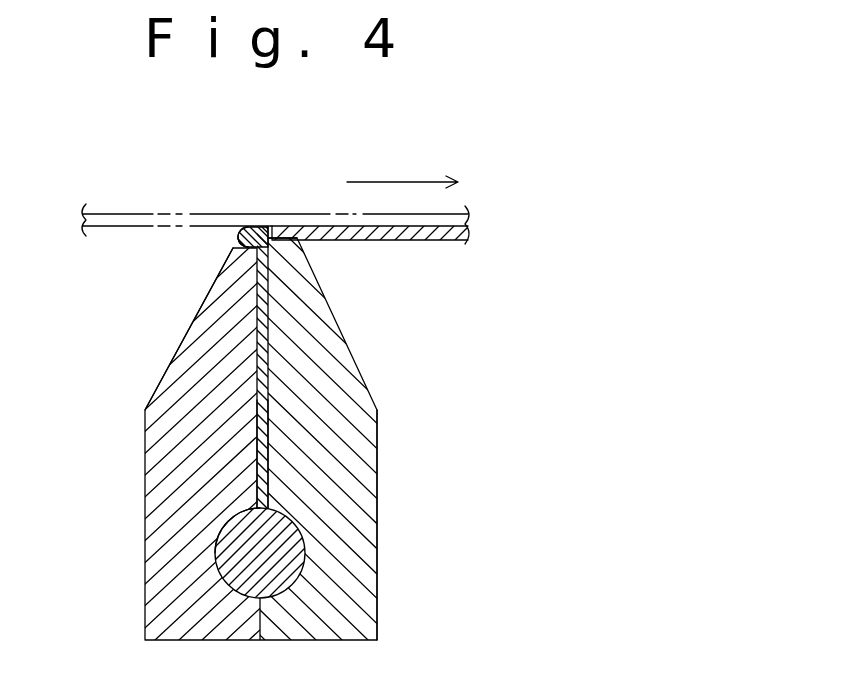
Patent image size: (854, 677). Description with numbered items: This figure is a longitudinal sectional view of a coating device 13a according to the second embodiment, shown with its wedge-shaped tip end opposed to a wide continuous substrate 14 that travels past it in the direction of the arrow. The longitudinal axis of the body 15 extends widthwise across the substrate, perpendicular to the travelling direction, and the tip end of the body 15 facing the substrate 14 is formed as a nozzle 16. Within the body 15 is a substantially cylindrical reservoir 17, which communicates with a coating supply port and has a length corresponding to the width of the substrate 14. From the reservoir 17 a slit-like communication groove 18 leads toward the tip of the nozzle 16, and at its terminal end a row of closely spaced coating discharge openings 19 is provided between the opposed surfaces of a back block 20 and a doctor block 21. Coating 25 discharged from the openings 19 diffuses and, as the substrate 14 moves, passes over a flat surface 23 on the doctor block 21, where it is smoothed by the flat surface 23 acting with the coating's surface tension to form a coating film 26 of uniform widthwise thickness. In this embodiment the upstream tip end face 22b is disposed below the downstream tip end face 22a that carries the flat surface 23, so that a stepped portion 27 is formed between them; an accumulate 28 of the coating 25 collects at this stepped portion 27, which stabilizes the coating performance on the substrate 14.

The coating device 13a is at (399, 399).
The substrate 14 is at (116, 198).
The body 15 is at (392, 545).
The nozzle 16 is at (204, 277).
The reservoir 17 is at (303, 555).
The communication groove 18 is at (268, 430).
The coating discharge openings 19 is at (262, 292).
The back block 20 is at (175, 478).
The doctor block 21 is at (357, 473).
The tip end face 22a is at (273, 228).
The tip end face 22b is at (238, 232).
The flat surface 23 is at (290, 228).
The coating 25 is at (213, 558).
The coating film 26 is at (437, 237).
The stepped portion 27 is at (253, 232).
The accumulate 28 is at (243, 232).